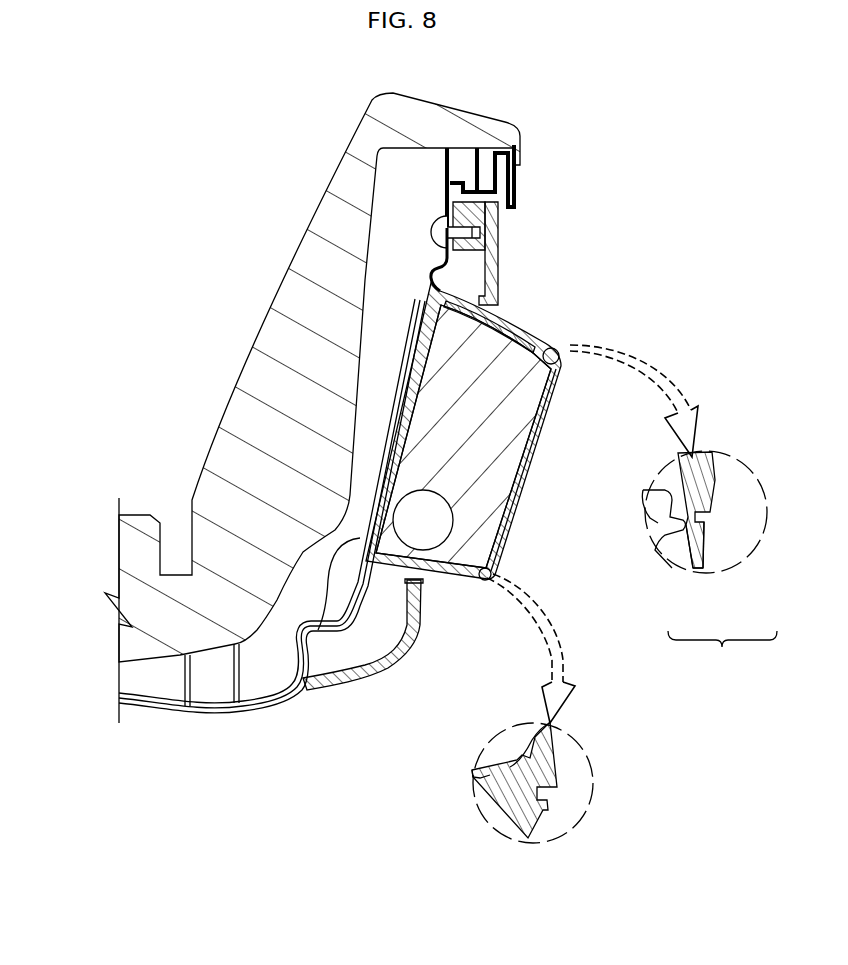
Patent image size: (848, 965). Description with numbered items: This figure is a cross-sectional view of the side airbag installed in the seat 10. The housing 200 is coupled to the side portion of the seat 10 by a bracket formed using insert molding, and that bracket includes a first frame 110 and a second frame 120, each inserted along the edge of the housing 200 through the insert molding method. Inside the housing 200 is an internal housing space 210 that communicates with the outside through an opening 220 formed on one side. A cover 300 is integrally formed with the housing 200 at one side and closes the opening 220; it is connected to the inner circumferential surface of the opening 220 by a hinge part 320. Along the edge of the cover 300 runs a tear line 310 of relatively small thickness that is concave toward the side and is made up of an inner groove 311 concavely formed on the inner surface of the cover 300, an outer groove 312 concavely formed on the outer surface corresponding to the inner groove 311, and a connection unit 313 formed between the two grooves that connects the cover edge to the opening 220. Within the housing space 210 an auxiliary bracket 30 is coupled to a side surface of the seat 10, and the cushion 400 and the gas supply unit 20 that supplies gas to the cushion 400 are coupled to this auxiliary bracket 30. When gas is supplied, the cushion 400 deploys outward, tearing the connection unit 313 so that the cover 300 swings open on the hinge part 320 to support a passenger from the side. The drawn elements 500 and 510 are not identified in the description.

The seat 10 is at (134, 558).
The gas supply unit 20 is at (420, 511).
The auxiliary bracket 30 is at (375, 322).
The first frame 110 is at (450, 582).
The second frame 120 is at (488, 245).
The housing 200 is at (469, 574).
The housing space 210 is at (385, 580).
The opening 220 is at (682, 528).
The cover 300 is at (530, 461).
The tear line 310 is at (720, 602).
The inner groove 311 is at (673, 572).
The outer groove 312 is at (725, 535).
The connection unit 313 is at (698, 572).
The hinge part 320 is at (500, 822).
The cushion 400 is at (426, 387).
The retainer 500 is at (503, 276).
The retainer flange 510 is at (504, 318).